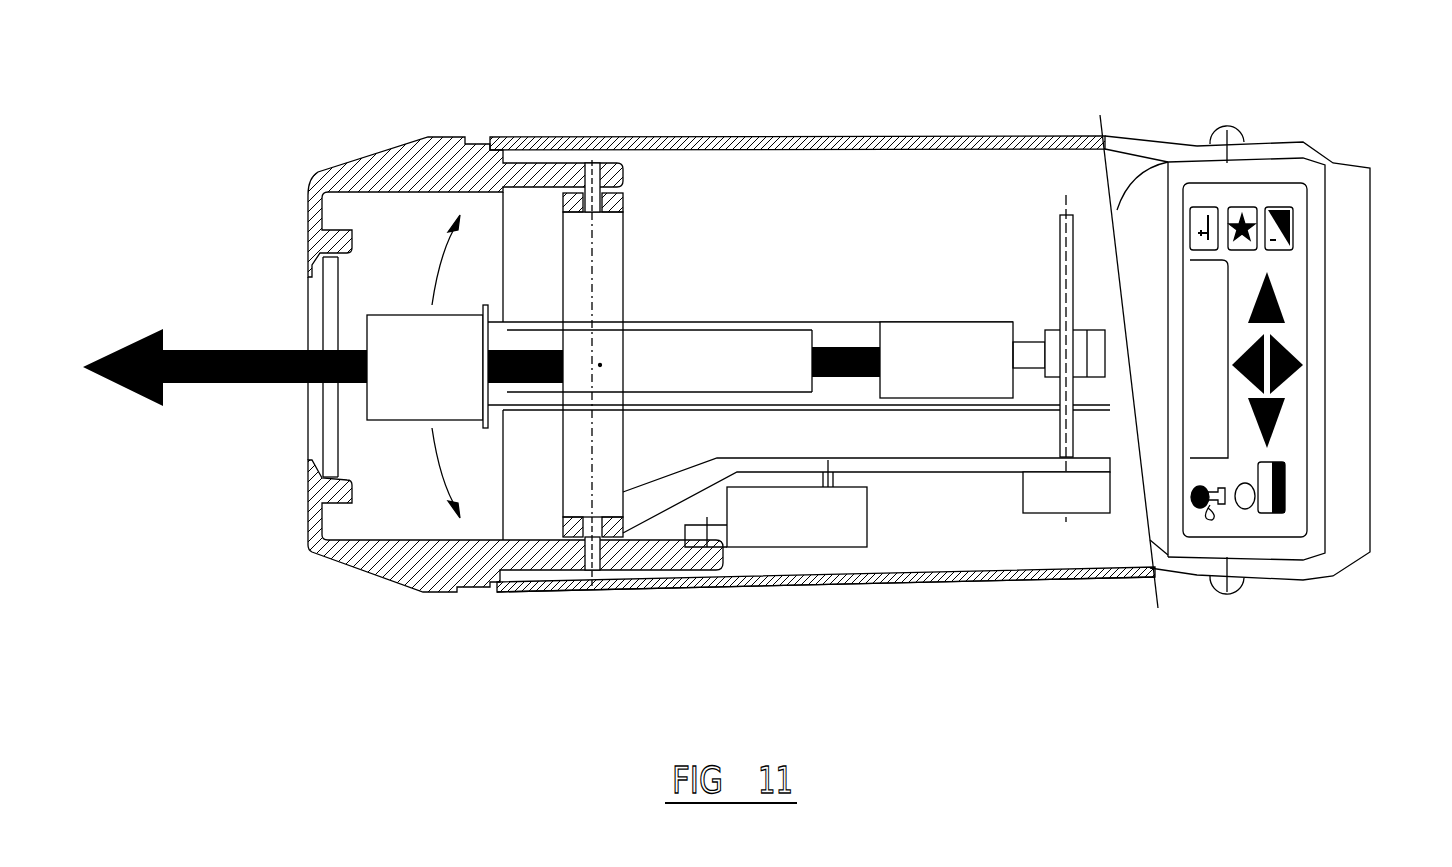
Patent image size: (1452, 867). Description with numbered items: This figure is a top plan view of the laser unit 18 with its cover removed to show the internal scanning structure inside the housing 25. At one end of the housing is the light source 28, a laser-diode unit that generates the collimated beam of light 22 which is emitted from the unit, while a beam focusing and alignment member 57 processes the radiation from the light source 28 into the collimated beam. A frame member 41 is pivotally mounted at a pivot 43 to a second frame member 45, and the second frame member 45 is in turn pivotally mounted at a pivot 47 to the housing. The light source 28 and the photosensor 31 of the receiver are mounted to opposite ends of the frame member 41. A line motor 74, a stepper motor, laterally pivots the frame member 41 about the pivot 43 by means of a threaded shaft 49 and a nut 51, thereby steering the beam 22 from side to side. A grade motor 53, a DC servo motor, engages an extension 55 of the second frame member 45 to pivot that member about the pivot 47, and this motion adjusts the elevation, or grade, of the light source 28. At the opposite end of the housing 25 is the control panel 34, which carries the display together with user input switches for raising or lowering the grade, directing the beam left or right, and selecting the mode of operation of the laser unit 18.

The laser unit 18 is at (870, 128).
The collimated beam of light 22 is at (263, 350).
The housing 25 is at (1063, 580).
The light source 28 is at (948, 320).
The photosensor 31 is at (390, 420).
The control panel 34 is at (1305, 310).
The frame member 41 is at (745, 322).
The pivot 43 is at (600, 365).
The second frame member 45 is at (622, 290).
The pivot 47 is at (582, 165).
The threaded shaft 49 is at (1058, 247).
The nut 51 is at (1073, 380).
The grade motor 53 is at (780, 548).
The extension 55 is at (887, 472).
The beam focusing and alignment member 57 is at (688, 335).
The line motor 74 is at (1043, 513).